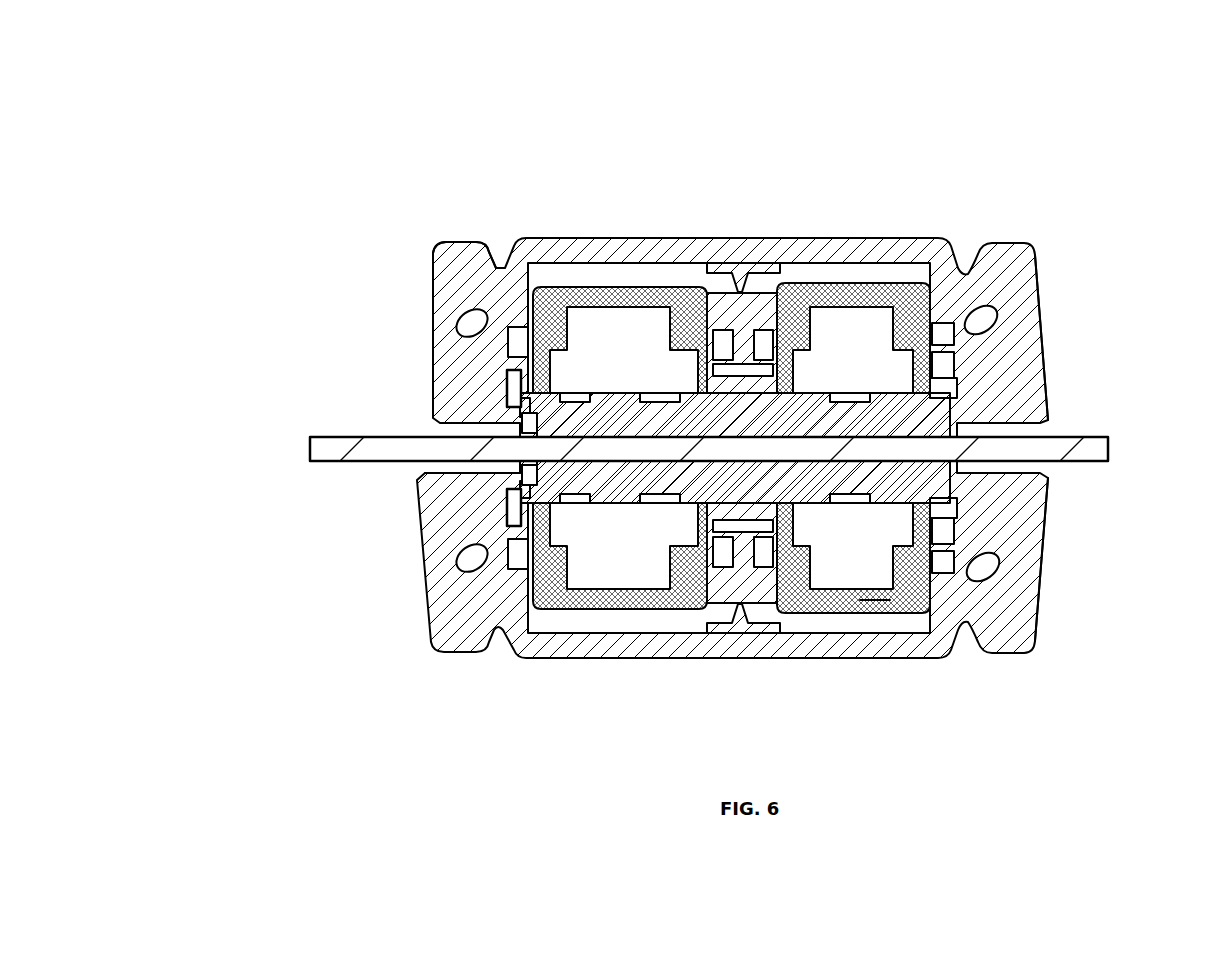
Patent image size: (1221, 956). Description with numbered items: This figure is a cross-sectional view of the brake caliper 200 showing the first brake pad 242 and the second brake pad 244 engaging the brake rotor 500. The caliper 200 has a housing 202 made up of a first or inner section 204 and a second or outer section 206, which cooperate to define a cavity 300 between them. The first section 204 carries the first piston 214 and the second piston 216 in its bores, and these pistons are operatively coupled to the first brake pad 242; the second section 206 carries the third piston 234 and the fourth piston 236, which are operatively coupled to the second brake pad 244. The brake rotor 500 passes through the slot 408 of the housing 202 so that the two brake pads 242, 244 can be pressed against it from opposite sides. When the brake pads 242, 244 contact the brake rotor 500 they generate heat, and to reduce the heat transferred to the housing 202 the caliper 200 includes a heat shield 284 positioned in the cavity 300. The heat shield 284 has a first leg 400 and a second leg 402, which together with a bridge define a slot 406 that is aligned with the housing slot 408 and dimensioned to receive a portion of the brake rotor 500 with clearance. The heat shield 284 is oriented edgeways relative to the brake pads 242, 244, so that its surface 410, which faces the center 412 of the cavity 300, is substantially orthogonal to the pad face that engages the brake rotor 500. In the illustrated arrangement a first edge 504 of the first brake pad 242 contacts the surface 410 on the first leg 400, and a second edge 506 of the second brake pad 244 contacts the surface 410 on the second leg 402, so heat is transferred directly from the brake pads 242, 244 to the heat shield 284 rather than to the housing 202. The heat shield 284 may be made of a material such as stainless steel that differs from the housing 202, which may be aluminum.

The brake caliper 200 is at (338, 122).
The housing 202 is at (445, 318).
The first section 204 is at (458, 258).
The second section 206 is at (470, 618).
The first piston 214 is at (598, 293).
The second piston 216 is at (842, 283).
The third piston 234 is at (595, 602).
The fourth piston 236 is at (870, 488).
The first brake pad 242 is at (845, 417).
The second brake pad 244 is at (875, 600).
The heat shield 284 is at (512, 385).
The cavity 300 is at (1038, 400).
The first leg 400 is at (512, 403).
The second leg 402 is at (513, 513).
The slot 406 is at (524, 442).
The slot 408 is at (398, 470).
The surface 410 is at (527, 386).
The center 412 is at (745, 452).
The brake rotor 500 is at (1090, 453).
The first edge 504 is at (512, 416).
The second edge 506 is at (513, 500).